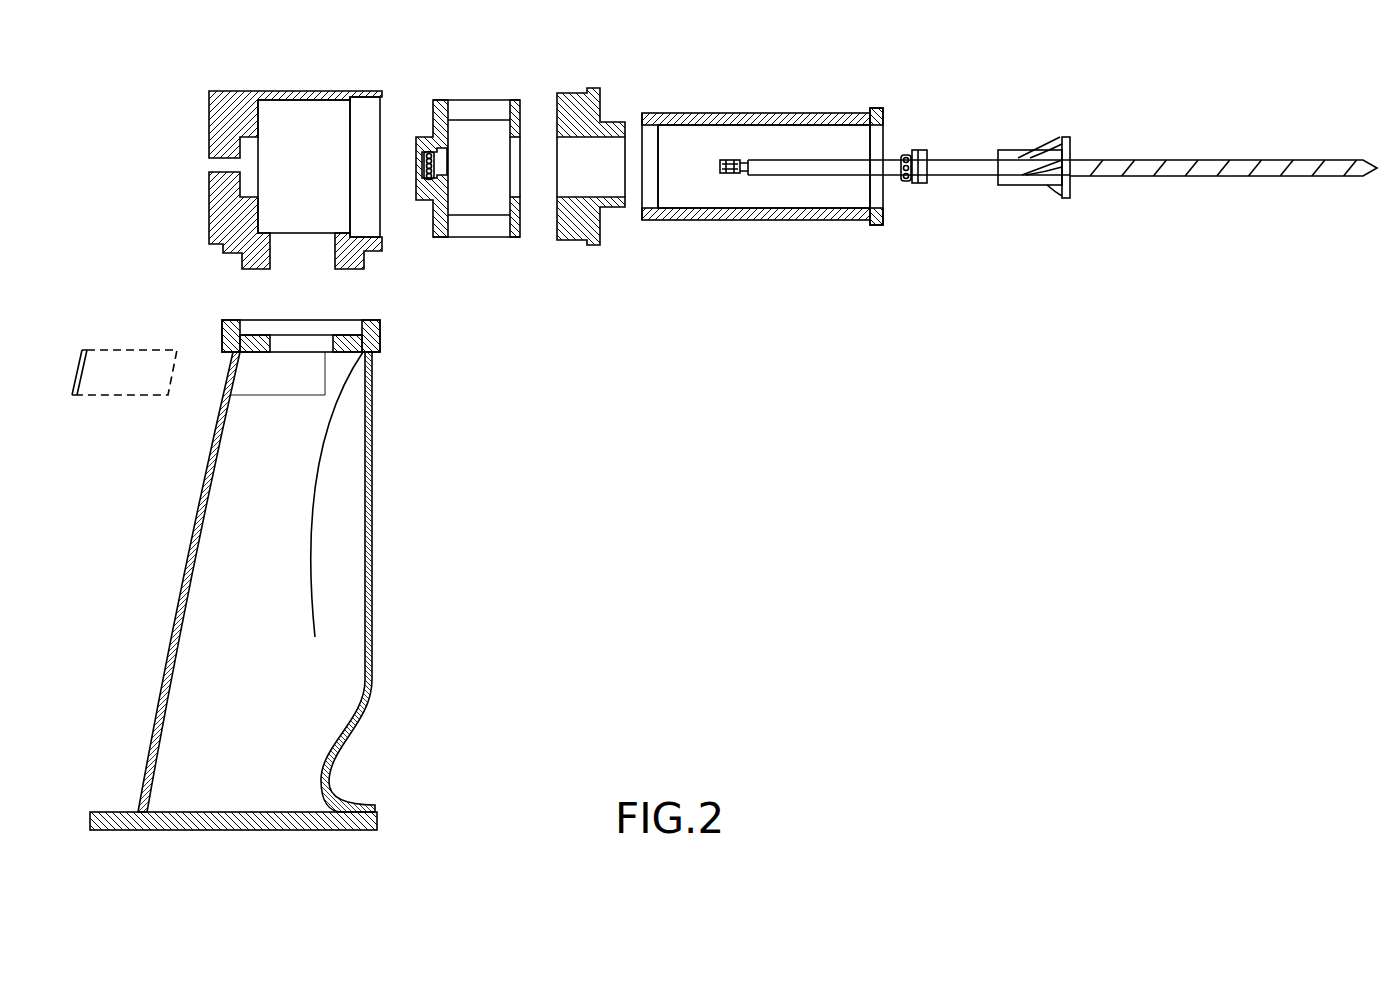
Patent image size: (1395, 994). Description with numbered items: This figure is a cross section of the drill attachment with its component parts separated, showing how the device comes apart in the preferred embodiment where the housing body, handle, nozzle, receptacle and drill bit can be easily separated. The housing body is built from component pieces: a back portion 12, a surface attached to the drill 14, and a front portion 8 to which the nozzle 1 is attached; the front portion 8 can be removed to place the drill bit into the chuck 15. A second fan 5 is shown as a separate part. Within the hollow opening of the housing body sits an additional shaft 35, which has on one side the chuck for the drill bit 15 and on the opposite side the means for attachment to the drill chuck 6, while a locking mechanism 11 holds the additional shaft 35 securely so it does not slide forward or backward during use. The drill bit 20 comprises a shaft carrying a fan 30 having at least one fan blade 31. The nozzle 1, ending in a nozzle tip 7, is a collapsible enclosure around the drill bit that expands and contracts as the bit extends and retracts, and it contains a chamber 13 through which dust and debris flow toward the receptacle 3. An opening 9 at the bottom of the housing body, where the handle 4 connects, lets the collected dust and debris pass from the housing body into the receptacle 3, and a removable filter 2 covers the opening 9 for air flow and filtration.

The nozzle 1 is at (778, 220).
The filter 2 is at (122, 383).
The receptacle 3 is at (270, 555).
The handle 4 is at (370, 513).
The second fan 5 is at (487, 110).
The means for attachment to drill chuck 6 is at (730, 175).
The nozzle tip 7 is at (883, 202).
The front portion of housing body 8 is at (588, 233).
The opening from housing body into receptacle 9 is at (298, 343).
The locking mechanism for additional shaft 11 is at (443, 150).
The back portion of housing body 12 is at (216, 226).
The chamber within nozzle 13 is at (820, 190).
The back portion of housing body attached to drill 14 is at (220, 115).
The chuck for drill bit 15 is at (1012, 173).
The drill bit 20 is at (1220, 177).
The fan 30 is at (1063, 137).
The fan blade 31 is at (1053, 142).
The additional shaft 35 is at (810, 167).